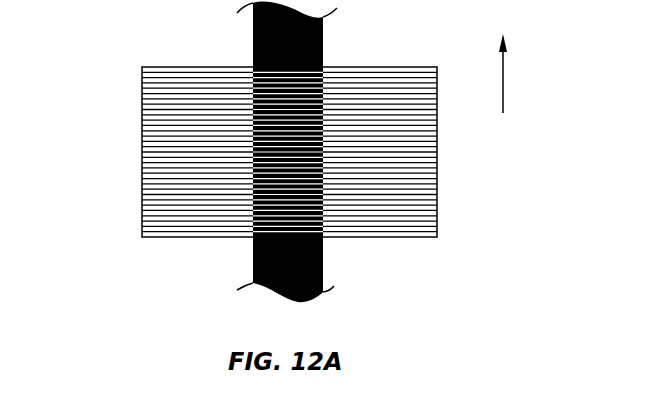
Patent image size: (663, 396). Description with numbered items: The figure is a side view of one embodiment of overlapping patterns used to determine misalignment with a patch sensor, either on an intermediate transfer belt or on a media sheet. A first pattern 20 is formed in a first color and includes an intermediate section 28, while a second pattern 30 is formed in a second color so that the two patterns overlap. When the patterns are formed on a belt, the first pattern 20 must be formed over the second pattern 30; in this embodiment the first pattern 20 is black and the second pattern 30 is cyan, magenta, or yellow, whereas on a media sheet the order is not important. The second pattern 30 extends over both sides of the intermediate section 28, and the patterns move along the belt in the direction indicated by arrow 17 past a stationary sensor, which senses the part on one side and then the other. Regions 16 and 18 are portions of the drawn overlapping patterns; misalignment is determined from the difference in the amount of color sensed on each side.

The substrate 16 is at (400, 190).
The arrow 17 is at (503, 75).
The upper layer 18 is at (162, 107).
The first pattern 20 is at (244, 30).
The intermediate section 28 is at (298, 258).
The second pattern 30 is at (162, 200).